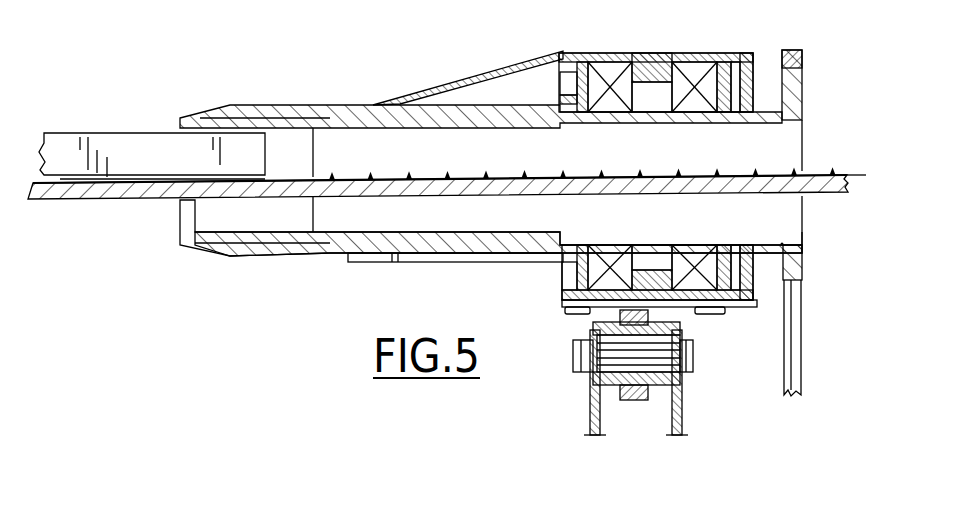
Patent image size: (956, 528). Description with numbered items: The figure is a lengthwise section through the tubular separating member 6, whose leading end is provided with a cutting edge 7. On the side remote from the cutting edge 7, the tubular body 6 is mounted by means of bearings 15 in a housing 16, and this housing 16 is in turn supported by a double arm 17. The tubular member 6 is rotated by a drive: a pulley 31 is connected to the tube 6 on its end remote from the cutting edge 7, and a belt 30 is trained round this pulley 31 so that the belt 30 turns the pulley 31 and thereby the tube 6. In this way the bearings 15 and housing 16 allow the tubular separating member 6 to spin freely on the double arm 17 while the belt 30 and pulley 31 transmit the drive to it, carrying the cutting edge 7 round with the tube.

The separating member 6 is at (332, 104).
The cutting edge 7 is at (178, 118).
The bearings 15 is at (650, 62).
The housing 16 is at (618, 62).
The double arm 17 is at (682, 405).
The belt 30 is at (802, 322).
The pulley 31 is at (803, 100).